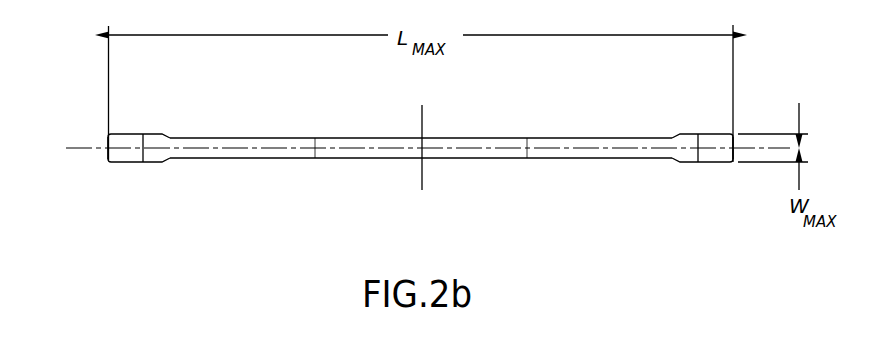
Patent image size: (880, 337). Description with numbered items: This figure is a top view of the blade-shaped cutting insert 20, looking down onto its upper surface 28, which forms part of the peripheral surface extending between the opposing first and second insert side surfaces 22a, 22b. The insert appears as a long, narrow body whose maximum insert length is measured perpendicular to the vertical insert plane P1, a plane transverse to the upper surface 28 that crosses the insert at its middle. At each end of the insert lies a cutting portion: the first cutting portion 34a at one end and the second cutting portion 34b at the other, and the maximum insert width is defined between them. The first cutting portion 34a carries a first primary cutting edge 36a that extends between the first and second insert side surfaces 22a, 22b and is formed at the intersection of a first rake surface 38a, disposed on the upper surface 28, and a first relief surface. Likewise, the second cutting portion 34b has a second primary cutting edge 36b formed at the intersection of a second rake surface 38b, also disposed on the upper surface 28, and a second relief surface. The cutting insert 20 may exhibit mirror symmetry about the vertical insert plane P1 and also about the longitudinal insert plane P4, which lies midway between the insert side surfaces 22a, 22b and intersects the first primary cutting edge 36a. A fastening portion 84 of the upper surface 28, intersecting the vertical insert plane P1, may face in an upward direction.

The cutting insert 20 is at (415, 156).
The upper surface 28 is at (421, 153).
The fastening portion 84 is at (373, 158).
The first insert side surface 22a is at (555, 160).
The second insert side surface 22b is at (555, 136).
The first cutting portion 34a is at (712, 146).
The second cutting portion 34b is at (122, 147).
The first primary cutting edge 36a is at (735, 139).
The second primary cutting edge 36b is at (107, 142).
The first rake surface 38a is at (715, 138).
The second rake surface 38b is at (127, 138).
The vertical insert plane P1 is at (423, 161).
The longitudinal insert plane P4 is at (412, 149).